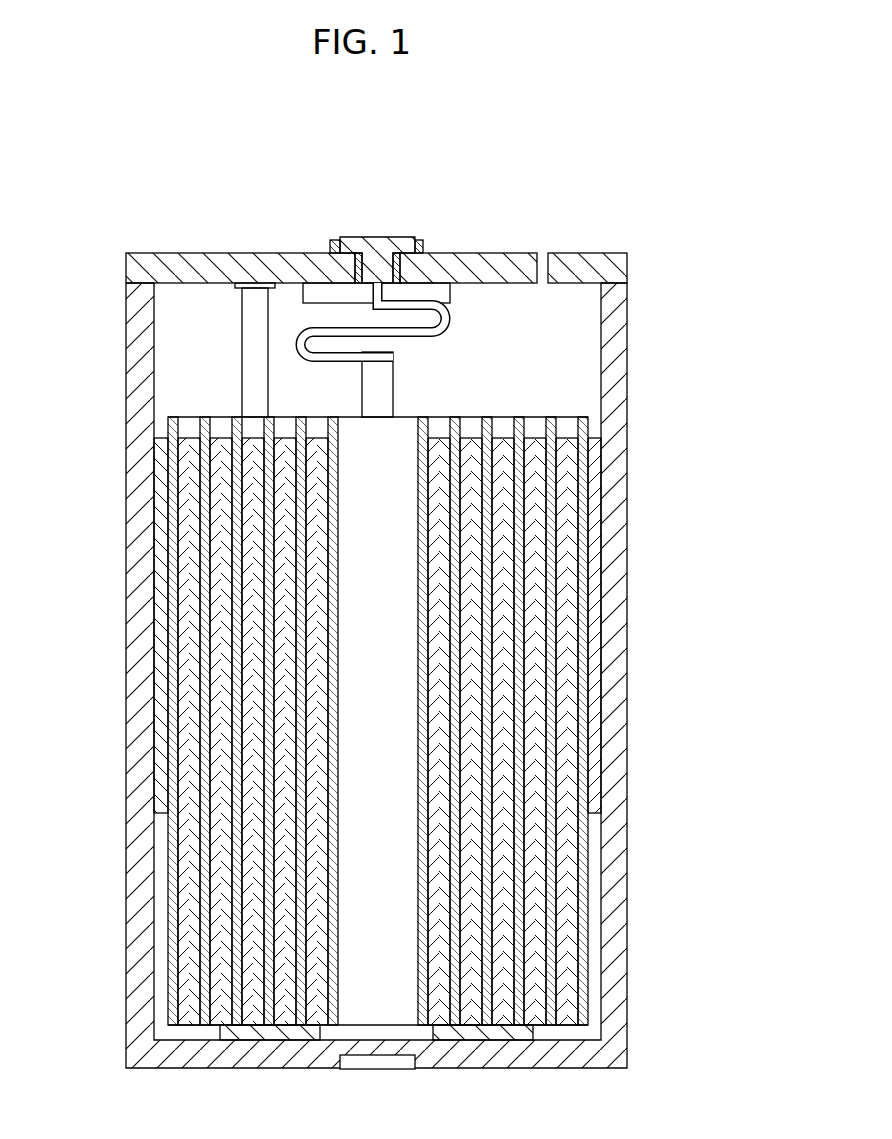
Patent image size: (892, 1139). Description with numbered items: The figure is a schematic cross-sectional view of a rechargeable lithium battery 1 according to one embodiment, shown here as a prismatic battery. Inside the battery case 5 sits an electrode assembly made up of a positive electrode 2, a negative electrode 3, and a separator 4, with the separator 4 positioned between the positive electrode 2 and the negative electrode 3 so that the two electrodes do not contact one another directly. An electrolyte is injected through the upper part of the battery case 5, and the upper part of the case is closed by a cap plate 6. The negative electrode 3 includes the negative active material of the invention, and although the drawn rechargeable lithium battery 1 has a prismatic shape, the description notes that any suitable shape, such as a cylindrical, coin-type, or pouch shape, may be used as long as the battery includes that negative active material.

The rechargeable lithium battery 1 is at (531, 195).
The positive electrode 2 is at (572, 866).
The negative electrode 3 is at (222, 872).
The separator 4 is at (203, 990).
The battery case 5 is at (142, 341).
The cap plate 6 is at (334, 238).